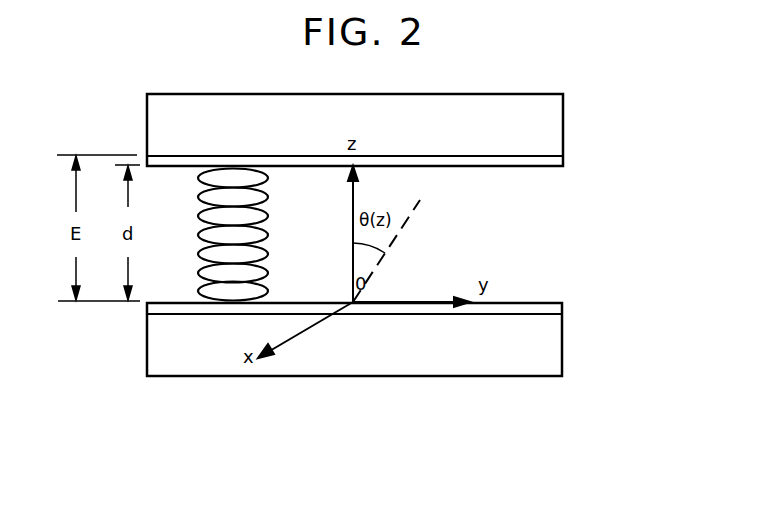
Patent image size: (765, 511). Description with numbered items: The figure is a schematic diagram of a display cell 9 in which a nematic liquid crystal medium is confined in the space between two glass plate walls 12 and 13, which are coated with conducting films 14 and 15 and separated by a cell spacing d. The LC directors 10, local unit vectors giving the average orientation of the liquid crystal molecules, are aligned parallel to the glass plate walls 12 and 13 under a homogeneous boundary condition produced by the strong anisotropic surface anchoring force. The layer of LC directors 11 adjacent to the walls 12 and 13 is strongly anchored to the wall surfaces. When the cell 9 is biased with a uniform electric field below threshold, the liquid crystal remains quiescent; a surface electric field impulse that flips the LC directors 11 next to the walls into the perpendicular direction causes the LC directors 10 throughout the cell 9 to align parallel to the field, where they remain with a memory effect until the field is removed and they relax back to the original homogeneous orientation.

The cell 9 is at (165, 127).
The LC directors 10 is at (256, 232).
The LC directors adjacent to the walls 11 is at (262, 172).
The glass plate wall 12 is at (525, 112).
The glass plate wall 13 is at (525, 365).
The conducting film 14 is at (555, 164).
The conducting film 15 is at (555, 312).